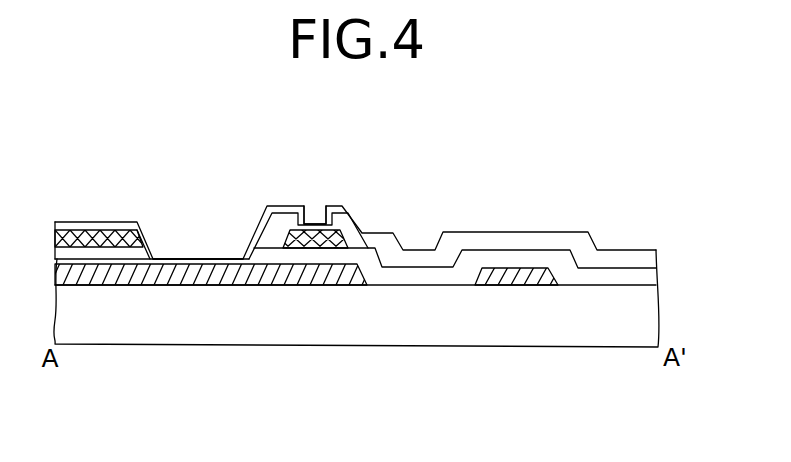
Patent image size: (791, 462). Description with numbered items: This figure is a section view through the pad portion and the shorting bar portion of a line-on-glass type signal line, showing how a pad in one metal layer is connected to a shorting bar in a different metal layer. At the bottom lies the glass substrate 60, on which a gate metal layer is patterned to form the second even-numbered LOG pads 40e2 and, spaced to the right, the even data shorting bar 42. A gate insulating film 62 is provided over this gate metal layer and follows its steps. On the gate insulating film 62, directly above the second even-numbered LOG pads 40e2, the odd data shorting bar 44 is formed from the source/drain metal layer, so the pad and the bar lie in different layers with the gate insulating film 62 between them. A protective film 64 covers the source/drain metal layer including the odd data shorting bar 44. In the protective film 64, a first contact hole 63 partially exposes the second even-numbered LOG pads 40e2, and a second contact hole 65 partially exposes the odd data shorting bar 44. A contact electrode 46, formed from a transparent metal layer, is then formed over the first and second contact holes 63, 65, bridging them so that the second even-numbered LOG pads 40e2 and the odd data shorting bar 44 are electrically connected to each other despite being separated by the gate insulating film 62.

The glass substrate 60 is at (653, 322).
The second even-numbered LOG pads 40e2 is at (285, 284).
The even data shorting bar 42 is at (516, 286).
The gate insulating film 62 is at (653, 281).
The contact electrode 46 is at (276, 207).
The odd data shorting bar 44 is at (347, 238).
The protective film 64 is at (653, 256).
The first contact hole 63 is at (188, 243).
The second contact hole 65 is at (322, 200).